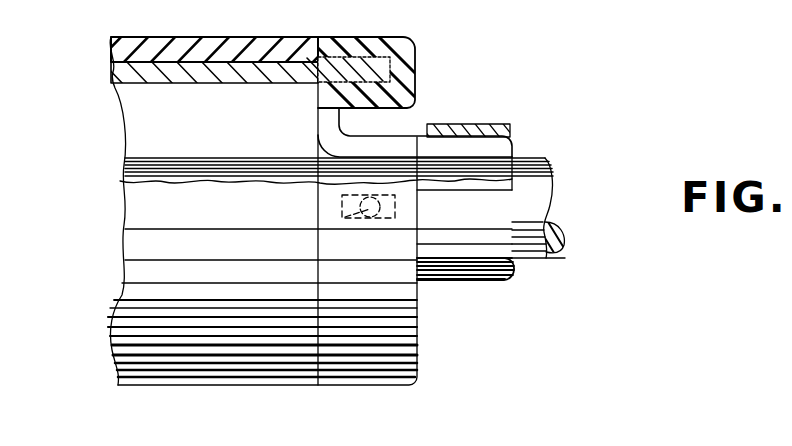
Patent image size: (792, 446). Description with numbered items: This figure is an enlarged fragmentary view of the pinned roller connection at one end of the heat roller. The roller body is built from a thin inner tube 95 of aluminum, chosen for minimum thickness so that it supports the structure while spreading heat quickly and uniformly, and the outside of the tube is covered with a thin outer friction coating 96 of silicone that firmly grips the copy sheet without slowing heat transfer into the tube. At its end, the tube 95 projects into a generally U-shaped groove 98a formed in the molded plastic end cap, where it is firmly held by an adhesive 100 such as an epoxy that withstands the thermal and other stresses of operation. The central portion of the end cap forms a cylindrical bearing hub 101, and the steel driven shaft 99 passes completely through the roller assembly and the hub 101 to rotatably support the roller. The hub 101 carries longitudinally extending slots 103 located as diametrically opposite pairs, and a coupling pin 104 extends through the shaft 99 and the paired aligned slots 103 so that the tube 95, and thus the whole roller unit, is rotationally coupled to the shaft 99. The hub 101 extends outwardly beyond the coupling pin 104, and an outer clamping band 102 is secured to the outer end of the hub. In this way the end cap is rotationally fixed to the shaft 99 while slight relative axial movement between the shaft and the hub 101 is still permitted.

The inner tube 95 is at (222, 78).
The outer friction coating 96 is at (277, 46).
The groove 98a is at (400, 68).
The driven shaft 99 is at (540, 192).
The adhesive 100 is at (355, 57).
The cylindrical bearing hub 101 is at (479, 124).
The outer clamping band 102 is at (507, 124).
The slots 103 is at (477, 204).
The coupling pin 104 is at (340, 217).